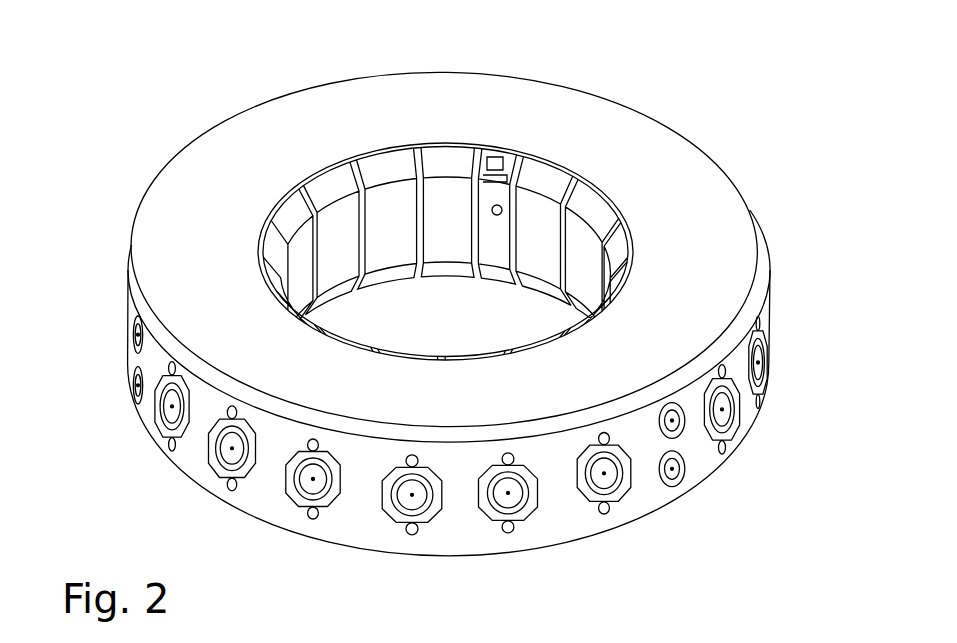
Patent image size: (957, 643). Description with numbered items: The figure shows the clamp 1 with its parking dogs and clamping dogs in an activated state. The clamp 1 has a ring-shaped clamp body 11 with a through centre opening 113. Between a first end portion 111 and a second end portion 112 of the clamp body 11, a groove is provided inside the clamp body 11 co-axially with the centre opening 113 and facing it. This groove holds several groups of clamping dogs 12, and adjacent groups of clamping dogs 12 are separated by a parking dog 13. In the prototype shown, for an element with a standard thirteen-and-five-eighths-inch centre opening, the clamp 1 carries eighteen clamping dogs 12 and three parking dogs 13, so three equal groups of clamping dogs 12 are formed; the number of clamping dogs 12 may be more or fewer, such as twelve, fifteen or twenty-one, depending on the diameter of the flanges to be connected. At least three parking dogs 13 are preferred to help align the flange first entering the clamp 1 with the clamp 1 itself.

The clamp 1 is at (716, 77).
The clamp body 11 is at (760, 217).
The first end portion 111 is at (183, 250).
The second end portion 112 is at (640, 522).
The centre opening 113 is at (313, 190).
The clamping dogs 12 is at (393, 207).
The parking dog 13 is at (492, 182).